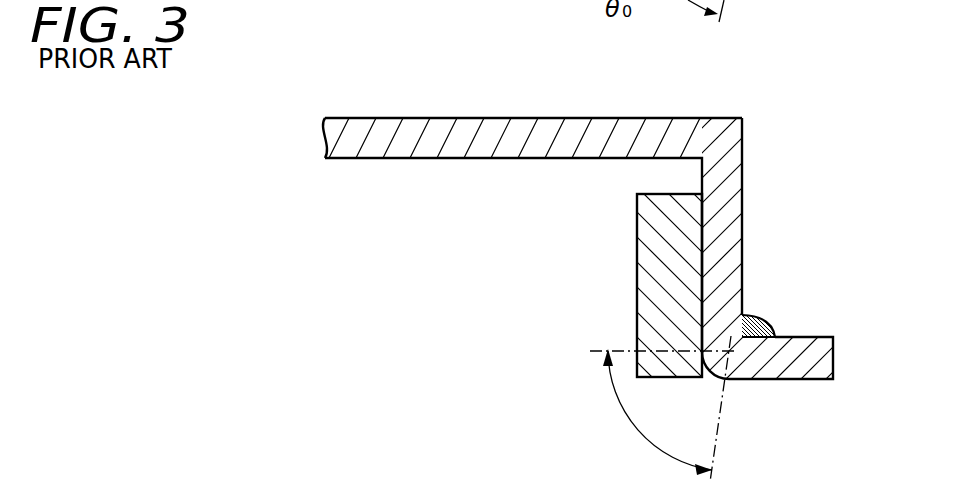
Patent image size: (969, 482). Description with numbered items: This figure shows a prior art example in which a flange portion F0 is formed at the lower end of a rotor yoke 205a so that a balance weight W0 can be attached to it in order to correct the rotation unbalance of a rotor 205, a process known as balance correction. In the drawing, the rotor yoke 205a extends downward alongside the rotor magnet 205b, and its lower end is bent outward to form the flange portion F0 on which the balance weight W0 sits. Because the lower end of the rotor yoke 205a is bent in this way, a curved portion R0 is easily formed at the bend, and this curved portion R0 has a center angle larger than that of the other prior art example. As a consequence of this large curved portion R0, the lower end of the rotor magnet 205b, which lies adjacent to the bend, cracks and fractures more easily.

The rotor 205 is at (317, 101).
The rotor yoke 205a is at (720, 176).
The rotor magnet 205b is at (683, 243).
The balance weight W0 is at (753, 316).
The flange portion F0 is at (791, 345).
The curved portion R0 is at (713, 371).